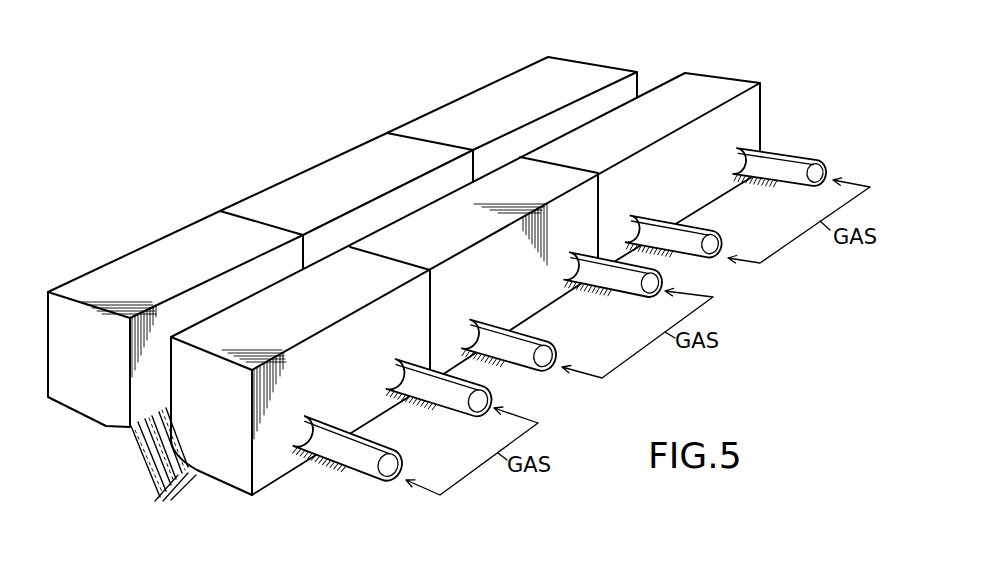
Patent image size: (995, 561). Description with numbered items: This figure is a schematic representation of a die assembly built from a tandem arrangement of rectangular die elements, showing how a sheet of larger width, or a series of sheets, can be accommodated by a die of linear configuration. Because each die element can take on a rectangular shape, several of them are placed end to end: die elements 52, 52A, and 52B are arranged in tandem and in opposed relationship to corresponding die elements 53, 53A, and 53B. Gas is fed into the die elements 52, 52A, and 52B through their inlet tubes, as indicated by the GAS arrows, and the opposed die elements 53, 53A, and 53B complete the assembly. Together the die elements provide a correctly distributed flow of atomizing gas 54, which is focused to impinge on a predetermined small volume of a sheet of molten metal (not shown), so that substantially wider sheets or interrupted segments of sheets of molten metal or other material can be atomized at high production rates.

The die element 52 is at (297, 472).
The die element 52A is at (549, 312).
The die element 52B is at (697, 204).
The die element 53 is at (148, 248).
The die element 53A is at (325, 167).
The die element 53B is at (488, 90).
The atomizing gas 54 is at (157, 490).